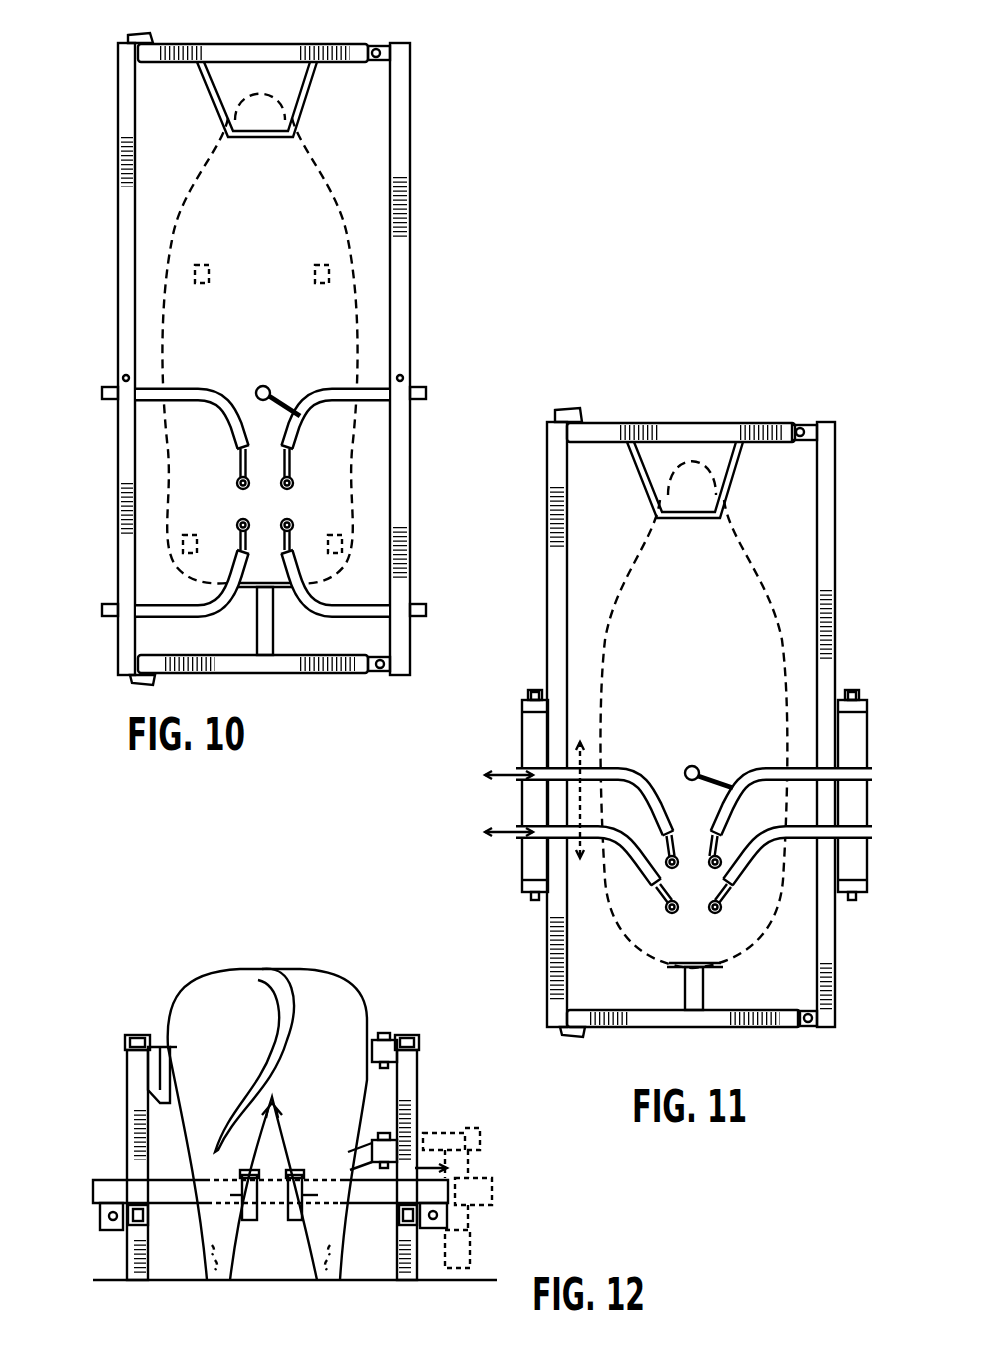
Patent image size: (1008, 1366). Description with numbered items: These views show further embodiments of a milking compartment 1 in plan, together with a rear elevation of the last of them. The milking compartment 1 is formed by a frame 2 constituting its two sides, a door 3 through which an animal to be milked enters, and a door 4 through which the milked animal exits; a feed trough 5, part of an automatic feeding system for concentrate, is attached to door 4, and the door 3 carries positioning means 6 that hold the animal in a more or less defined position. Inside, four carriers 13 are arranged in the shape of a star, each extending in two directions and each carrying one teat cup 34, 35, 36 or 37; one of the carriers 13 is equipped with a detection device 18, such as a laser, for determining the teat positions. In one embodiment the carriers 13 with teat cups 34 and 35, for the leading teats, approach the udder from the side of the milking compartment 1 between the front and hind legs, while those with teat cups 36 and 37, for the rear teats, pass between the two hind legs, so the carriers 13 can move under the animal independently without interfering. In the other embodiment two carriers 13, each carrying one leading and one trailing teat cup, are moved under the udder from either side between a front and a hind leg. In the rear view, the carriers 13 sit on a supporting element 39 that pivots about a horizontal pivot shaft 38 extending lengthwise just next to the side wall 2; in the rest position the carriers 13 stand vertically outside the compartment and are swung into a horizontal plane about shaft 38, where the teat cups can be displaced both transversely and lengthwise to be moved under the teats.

In FIG. 10, the milking compartment 1 is at (183, 189).
In FIG. 11, the milking compartment 1 is at (778, 534).
In FIG. 12, the milking compartment 1 is at (267, 1124).
In FIG. 10, the frame 2 is at (118, 178).
In FIG. 11, the frame 2 is at (547, 555).
In FIG. 12, the frame 2 is at (127, 1080).
In FIG. 10, the door 3 is at (330, 676).
In FIG. 11, the door 3 is at (775, 1030).
In FIG. 10, the door 4 is at (190, 47).
In FIG. 11, the door 4 is at (612, 423).
In FIG. 12, the door 4 is at (177, 1083).
In FIG. 10, the feed trough 5 is at (263, 142).
In FIG. 11, the feed trough 5 is at (700, 500).
In FIG. 10, the positioning means 6 is at (256, 630).
In FIG. 11, the positioning means 6 is at (685, 990).
In FIG. 10, the carrier 13 is at (205, 387).
In FIG. 11, the carrier 13 is at (625, 768).
In FIG. 12, the carrier 13 is at (108, 1180).
In FIG. 10, the detection device 18 is at (268, 386).
In FIG. 11, the detection device 18 is at (700, 766).
In FIG. 10, the teat cup 34 is at (236, 483).
In FIG. 11, the teat cup 34 is at (680, 852).
In FIG. 10, the teat cup 35 is at (294, 483).
In FIG. 11, the teat cup 35 is at (725, 858).
In FIG. 10, the teat cup 36 is at (305, 505).
In FIG. 11, the teat cup 36 is at (722, 907).
In FIG. 12, the teat cup 36 is at (298, 1222).
In FIG. 10, the teat cup 37 is at (237, 522).
In FIG. 11, the teat cup 37 is at (665, 905).
In FIG. 12, the teat cup 37 is at (255, 1222).
In FIG. 11, the horizontal pivot shaft 38 is at (535, 695).
In FIG. 12, the horizontal pivot shaft 38 is at (100, 1218).
In FIG. 11, the supporting element 39 is at (522, 730).
In FIG. 12, the supporting element 39 is at (110, 1232).